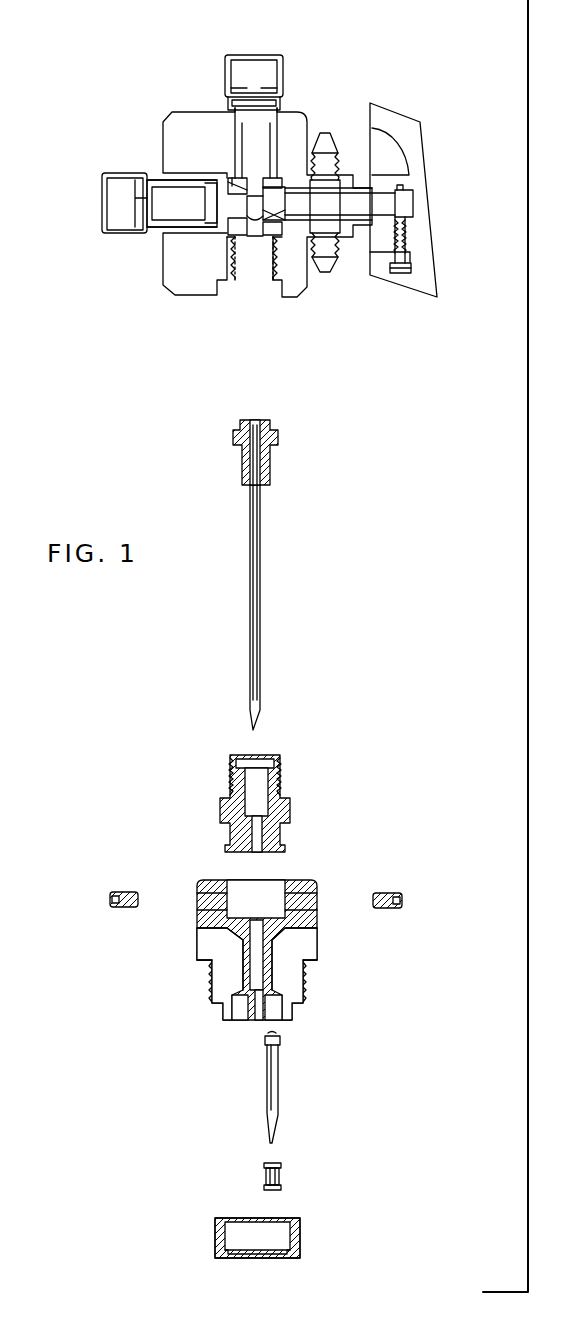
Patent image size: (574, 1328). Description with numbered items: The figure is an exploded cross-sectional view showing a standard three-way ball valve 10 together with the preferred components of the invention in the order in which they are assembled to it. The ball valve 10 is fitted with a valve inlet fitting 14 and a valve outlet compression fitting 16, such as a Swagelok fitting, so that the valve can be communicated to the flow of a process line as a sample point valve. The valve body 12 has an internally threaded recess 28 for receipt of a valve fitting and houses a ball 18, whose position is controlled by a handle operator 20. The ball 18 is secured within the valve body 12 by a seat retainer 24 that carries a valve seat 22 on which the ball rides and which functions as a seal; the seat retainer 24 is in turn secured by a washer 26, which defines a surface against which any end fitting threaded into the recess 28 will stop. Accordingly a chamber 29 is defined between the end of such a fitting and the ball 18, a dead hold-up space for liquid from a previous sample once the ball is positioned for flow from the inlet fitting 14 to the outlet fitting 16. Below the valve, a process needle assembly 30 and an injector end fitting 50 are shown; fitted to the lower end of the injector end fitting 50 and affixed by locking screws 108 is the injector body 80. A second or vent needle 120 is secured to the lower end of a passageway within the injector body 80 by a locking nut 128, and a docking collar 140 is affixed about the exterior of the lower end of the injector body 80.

The ball valve 10 is at (336, 88).
The valve body 12 is at (187, 272).
The valve inlet fitting 14 is at (117, 173).
The valve outlet compression fitting 16 is at (222, 72).
The ball 18 is at (270, 218).
The handle operator 20 is at (410, 177).
The valve seat 22 is at (271, 240).
The seat retainer 24 is at (252, 240).
The washer 26 is at (275, 240).
The internally threaded recess 28 is at (233, 240).
The chamber 29 is at (266, 237).
The process needle assembly 30 is at (270, 562).
The injector end fitting 50 is at (297, 795).
The injector body 80 is at (322, 880).
The locking screws 108 is at (110, 893).
The vent needle 120 is at (282, 1080).
The locking nut 128 is at (287, 1172).
The docking collar 140 is at (307, 1233).